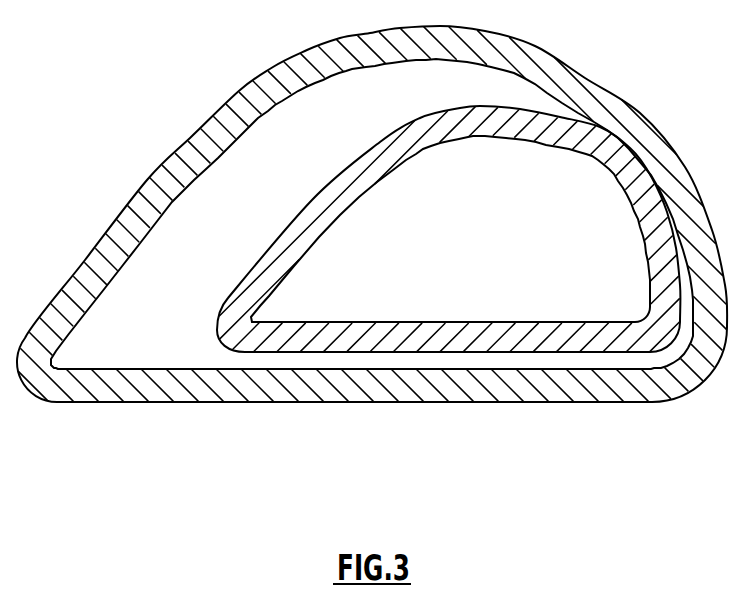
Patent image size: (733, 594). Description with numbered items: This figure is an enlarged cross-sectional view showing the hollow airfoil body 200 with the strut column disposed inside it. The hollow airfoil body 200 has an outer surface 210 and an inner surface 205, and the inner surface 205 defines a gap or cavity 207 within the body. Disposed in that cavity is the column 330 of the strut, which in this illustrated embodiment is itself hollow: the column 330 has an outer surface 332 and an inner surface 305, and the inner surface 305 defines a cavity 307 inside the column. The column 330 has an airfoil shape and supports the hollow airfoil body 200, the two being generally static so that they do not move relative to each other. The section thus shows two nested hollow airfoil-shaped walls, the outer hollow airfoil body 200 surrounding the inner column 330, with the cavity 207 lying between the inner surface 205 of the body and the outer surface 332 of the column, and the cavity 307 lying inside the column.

The hollow airfoil body 200 is at (372, 238).
The inner surface 205 is at (168, 212).
The gap or cavity 207 is at (372, 254).
The outer surface 210 is at (640, 113).
The inner surface 305 is at (357, 196).
The cavity 307 is at (450, 229).
The column 330 is at (448, 278).
The outer surface 332 is at (388, 134).